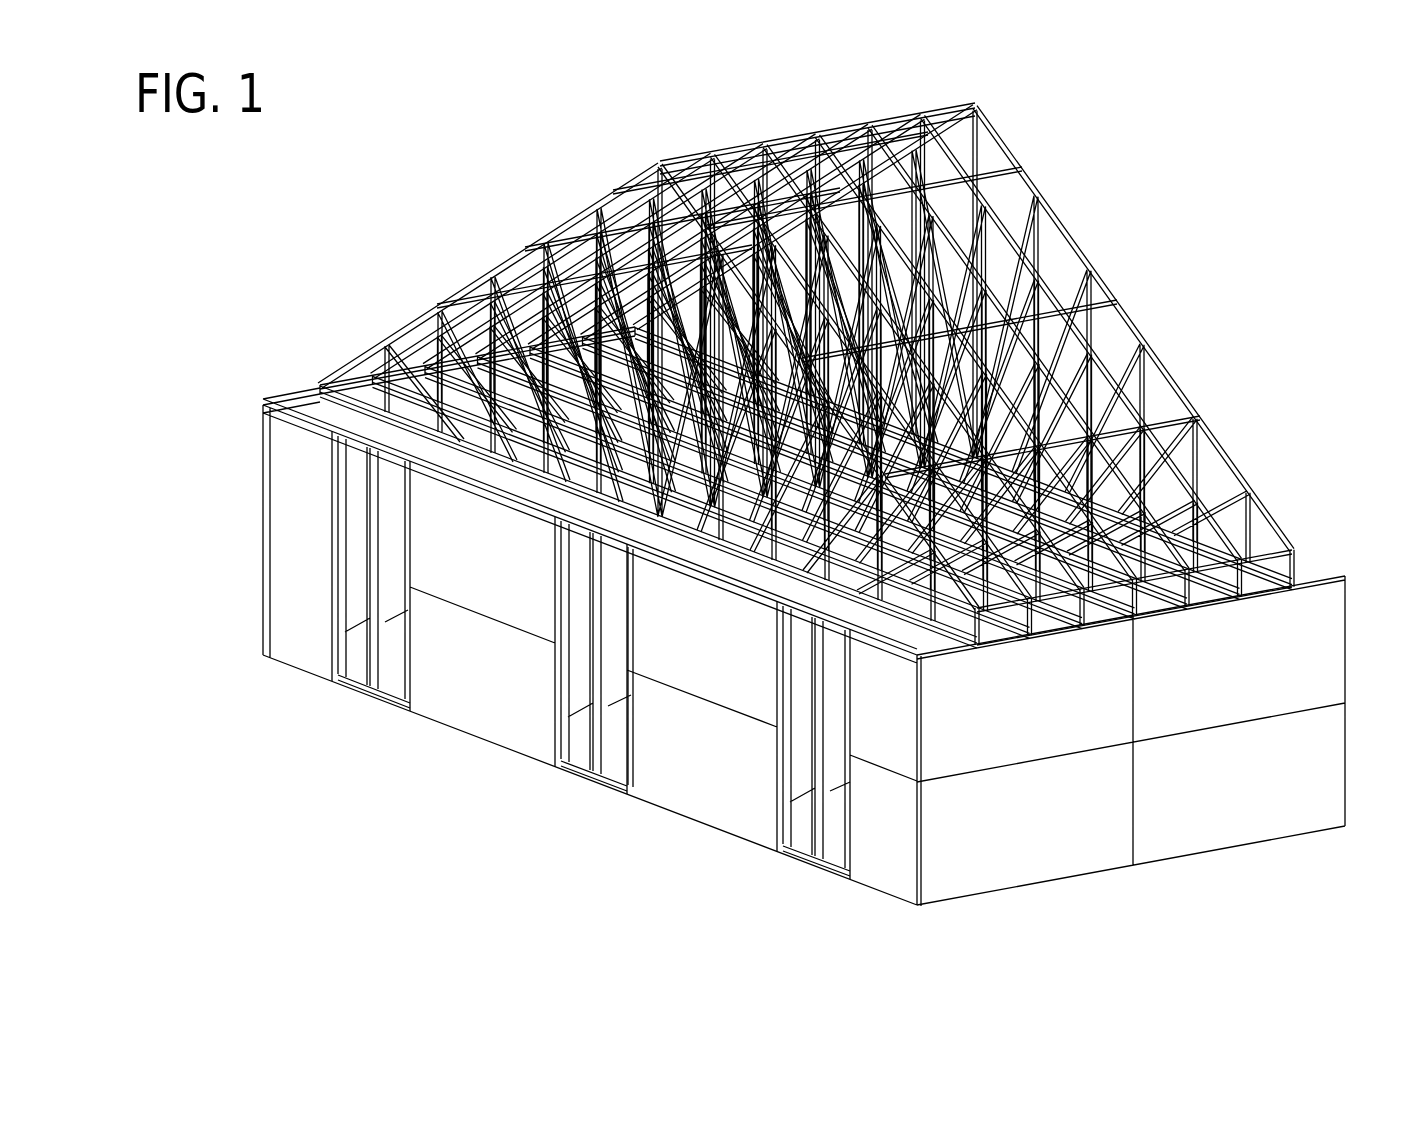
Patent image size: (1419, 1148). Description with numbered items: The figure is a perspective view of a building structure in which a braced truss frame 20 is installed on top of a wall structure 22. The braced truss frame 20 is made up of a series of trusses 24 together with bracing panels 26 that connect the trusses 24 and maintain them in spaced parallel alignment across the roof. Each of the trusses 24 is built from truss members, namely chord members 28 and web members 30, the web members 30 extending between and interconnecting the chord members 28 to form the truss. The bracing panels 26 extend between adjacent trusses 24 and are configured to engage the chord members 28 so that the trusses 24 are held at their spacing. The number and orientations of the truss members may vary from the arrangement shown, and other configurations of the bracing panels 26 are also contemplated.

The braced truss frame 20 is at (1130, 282).
The wall structure 22 is at (1058, 898).
The trusses 24 is at (600, 186).
The bracing panels 26 is at (1010, 186).
The chord members 28 is at (363, 357).
The web members 30 is at (560, 265).